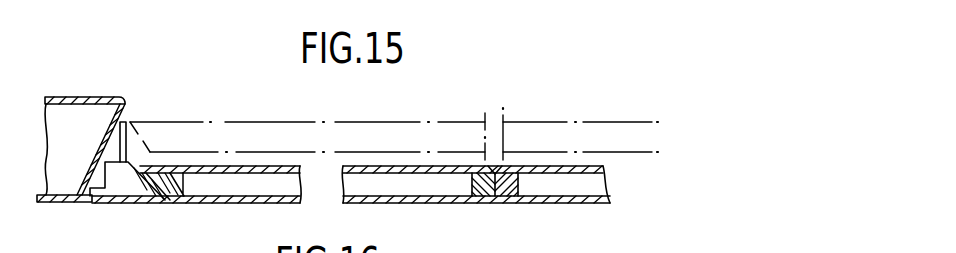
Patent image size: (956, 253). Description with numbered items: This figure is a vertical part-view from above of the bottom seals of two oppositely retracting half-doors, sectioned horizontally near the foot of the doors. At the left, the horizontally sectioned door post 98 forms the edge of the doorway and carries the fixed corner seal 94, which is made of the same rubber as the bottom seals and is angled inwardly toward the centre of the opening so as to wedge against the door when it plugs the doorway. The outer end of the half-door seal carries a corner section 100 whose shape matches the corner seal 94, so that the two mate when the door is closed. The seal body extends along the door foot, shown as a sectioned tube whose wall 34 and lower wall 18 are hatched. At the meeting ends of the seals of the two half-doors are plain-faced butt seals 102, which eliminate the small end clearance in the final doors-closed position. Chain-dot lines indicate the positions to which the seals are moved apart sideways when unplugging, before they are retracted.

The door post 98 is at (79, 96).
The corner seal 94 is at (113, 186).
The corner section 100 is at (162, 177).
The tubular member 34 is at (247, 168).
The bottom wall of tube 18 is at (238, 203).
The butt seal 102 is at (483, 190).